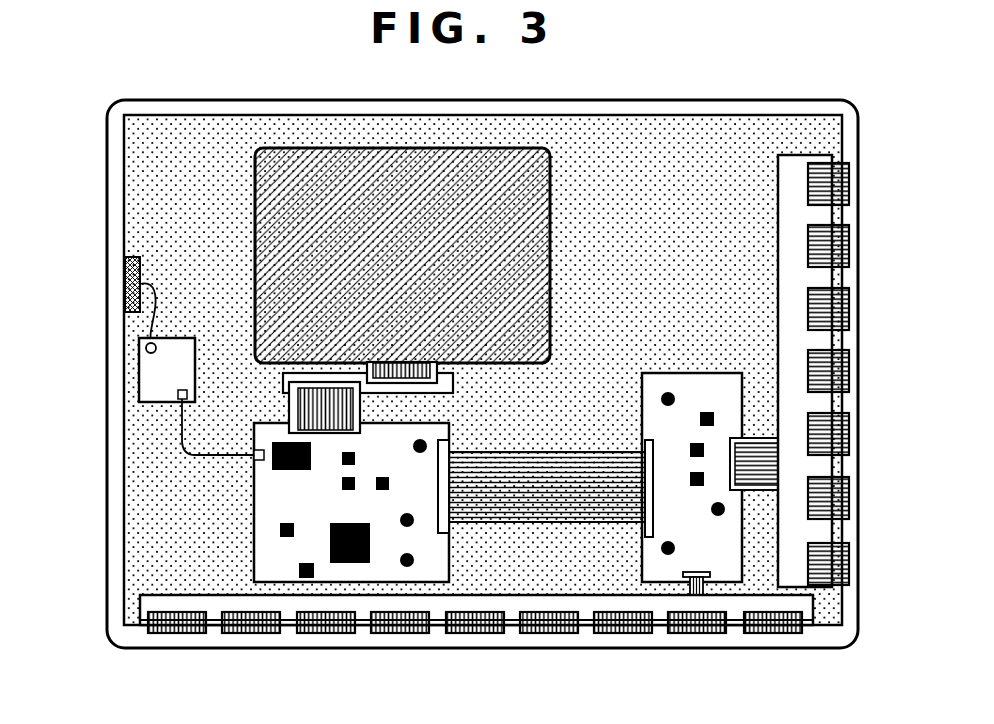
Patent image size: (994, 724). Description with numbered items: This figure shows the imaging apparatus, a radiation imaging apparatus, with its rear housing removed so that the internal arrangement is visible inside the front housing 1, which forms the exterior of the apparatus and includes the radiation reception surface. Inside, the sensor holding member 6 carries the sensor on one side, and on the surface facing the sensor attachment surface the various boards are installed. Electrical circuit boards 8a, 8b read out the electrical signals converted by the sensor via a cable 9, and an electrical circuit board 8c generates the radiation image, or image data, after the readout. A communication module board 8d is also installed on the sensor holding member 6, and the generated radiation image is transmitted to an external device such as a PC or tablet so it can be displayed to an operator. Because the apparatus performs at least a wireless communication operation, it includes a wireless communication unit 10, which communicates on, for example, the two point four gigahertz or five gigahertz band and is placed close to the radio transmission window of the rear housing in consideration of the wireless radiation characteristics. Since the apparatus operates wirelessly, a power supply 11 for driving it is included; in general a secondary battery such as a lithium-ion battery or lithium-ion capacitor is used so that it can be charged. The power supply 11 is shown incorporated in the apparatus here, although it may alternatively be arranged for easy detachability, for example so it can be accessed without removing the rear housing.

The front housing 1 is at (107, 164).
The sensor holding member 6 is at (215, 124).
The electrical circuit board 8a is at (797, 165).
The electrical circuit board 8b is at (140, 598).
The electrical circuit board 8c is at (262, 505).
The communication module board 8d is at (143, 371).
The cable 9 is at (840, 180).
The wireless communication unit 10 is at (125, 290).
The power supply 11 is at (367, 162).